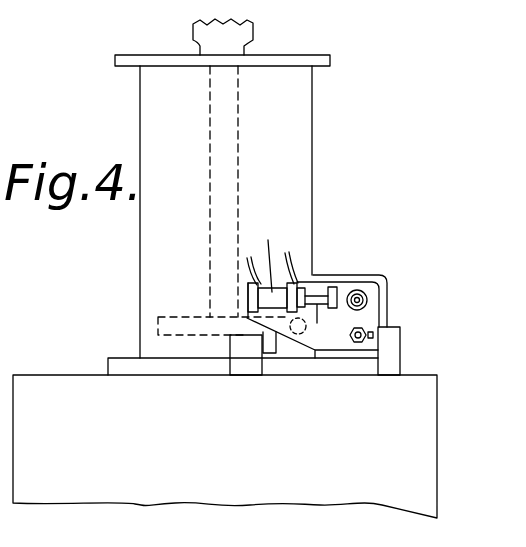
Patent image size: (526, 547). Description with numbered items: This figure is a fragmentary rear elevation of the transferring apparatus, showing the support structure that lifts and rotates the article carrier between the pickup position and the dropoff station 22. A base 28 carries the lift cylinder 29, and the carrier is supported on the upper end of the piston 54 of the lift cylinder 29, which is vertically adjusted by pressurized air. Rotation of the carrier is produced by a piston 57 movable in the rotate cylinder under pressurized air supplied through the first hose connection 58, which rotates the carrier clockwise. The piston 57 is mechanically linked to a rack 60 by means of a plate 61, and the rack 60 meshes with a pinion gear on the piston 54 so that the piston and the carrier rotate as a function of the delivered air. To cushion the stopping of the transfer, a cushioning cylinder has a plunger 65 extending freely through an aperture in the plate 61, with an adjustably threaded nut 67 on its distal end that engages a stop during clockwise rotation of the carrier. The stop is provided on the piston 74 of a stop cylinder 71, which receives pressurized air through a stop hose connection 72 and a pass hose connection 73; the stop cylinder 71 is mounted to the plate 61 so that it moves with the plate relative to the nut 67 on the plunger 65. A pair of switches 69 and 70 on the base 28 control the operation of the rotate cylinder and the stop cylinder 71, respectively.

The piston 54 is at (240, 33).
The lift cylinder 29 is at (140, 216).
The first hose connection 58 is at (0, 326).
The dropoff station 22 is at (187, 333).
The base 28 is at (198, 485).
The switch 70 is at (248, 362).
The rack 60 is at (298, 350).
The plate 61 is at (380, 310).
The plunger 65 is at (373, 300).
The adjustably threaded nut 67 is at (365, 290).
The piston 74 is at (349, 335).
The switch 69 is at (392, 356).
The piston 57 is at (362, 344).
The stop hose connection 72 is at (248, 277).
The stop cylinder 71 is at (263, 254).
The pass hose connection 73 is at (293, 262).